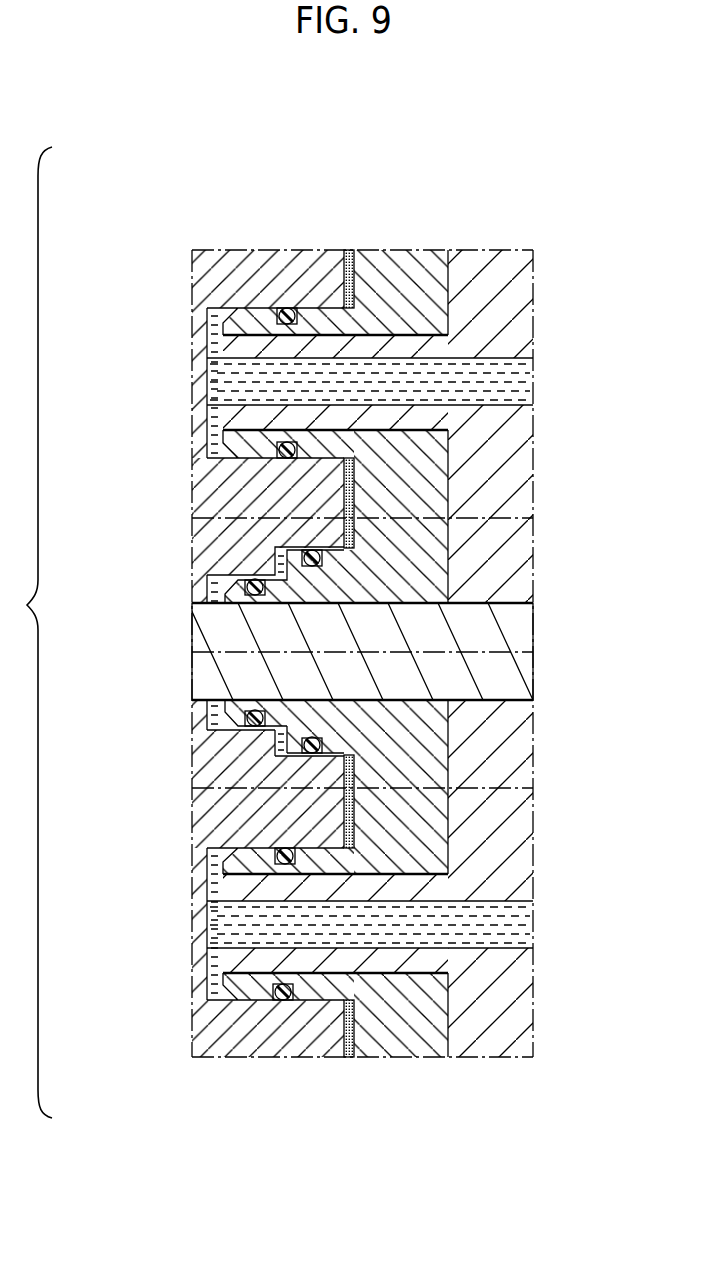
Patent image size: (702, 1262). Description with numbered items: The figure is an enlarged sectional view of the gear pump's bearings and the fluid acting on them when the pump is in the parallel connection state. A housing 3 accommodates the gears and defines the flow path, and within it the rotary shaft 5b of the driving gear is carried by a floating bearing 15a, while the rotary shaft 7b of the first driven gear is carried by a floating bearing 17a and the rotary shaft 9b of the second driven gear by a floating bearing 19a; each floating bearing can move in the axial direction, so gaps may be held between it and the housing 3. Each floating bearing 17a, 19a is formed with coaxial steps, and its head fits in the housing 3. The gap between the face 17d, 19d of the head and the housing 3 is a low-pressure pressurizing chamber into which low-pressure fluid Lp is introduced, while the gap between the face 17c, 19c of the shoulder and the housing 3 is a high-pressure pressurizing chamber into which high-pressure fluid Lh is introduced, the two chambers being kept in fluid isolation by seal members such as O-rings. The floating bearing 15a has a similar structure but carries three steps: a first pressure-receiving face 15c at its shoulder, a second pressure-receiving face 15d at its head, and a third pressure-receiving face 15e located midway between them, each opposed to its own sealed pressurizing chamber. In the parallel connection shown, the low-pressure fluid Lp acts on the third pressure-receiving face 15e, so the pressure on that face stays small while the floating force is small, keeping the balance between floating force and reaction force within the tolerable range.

The housing 3 is at (256, 258).
The rotary shaft 5b is at (212, 673).
The rotary shaft 7b is at (428, 352).
The rotary shaft 9b is at (377, 962).
The floating bearing 15a is at (432, 565).
The first pressure-receiving face 15c is at (346, 767).
The second pressure-receiving face 15d is at (224, 713).
The third pressure-receiving face 15e is at (281, 749).
The floating bearing 17a is at (381, 260).
The face of the shoulder 17c is at (347, 281).
The face of the head 17d is at (230, 322).
The floating bearing 19a is at (413, 1045).
The face of the shoulder 19c is at (348, 1043).
The face of the head 19d is at (224, 987).
The high-pressure fluid Lh is at (348, 258).
The low-pressure fluid Lp is at (514, 381).